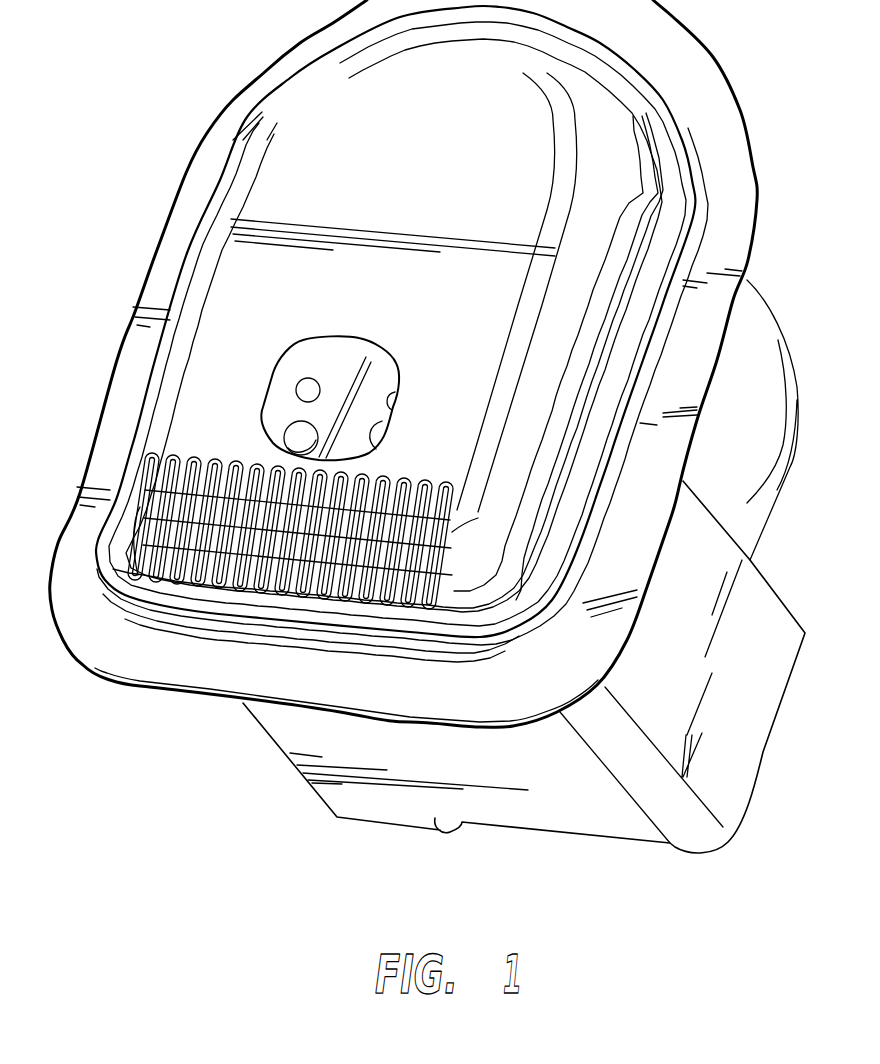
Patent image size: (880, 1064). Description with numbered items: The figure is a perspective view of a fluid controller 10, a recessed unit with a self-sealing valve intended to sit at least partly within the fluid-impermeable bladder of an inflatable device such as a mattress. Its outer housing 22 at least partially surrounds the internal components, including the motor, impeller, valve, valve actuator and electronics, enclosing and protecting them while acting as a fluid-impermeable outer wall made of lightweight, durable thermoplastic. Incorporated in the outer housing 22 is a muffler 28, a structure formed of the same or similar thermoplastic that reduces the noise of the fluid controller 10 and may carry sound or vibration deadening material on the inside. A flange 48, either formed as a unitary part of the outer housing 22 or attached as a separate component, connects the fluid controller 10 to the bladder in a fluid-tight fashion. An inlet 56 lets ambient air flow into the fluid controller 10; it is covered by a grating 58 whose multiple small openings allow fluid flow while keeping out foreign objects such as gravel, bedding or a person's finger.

The fluid controller 10 is at (216, 56).
The outer housing 22 is at (333, 820).
The muffler 28 is at (242, 274).
The flange 48 is at (133, 700).
The inlet 56 is at (302, 472).
The grating 58 is at (233, 470).